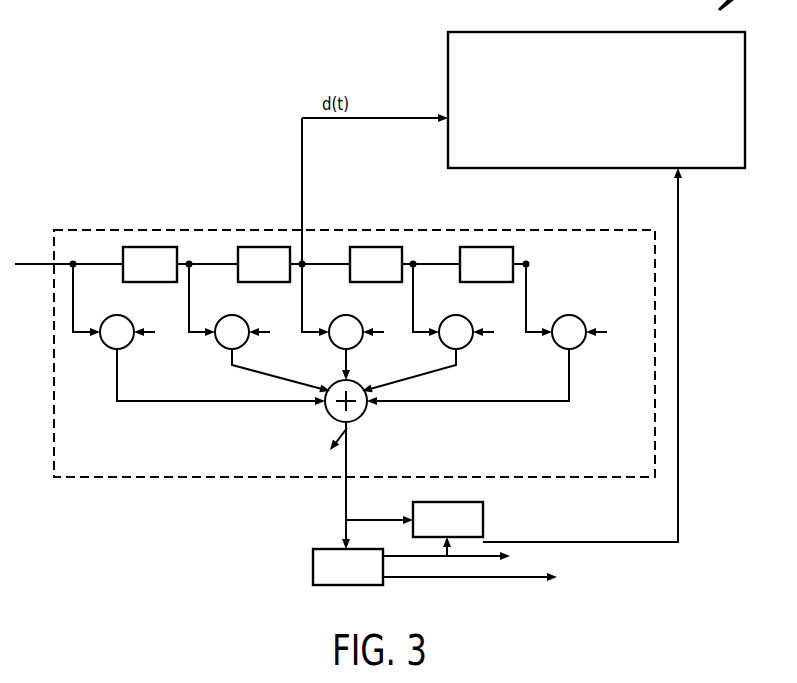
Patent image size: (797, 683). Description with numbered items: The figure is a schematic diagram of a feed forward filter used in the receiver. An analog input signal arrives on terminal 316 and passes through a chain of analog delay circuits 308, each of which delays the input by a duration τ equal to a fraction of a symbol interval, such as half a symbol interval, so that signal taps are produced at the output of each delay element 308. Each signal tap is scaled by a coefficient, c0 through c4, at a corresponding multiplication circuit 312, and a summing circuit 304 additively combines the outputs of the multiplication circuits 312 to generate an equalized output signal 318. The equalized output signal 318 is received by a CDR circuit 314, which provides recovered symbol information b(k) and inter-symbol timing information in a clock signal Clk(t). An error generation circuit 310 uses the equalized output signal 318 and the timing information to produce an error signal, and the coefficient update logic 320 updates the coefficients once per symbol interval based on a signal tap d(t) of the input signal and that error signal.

The summing circuit 304 is at (367, 411).
The analog delay circuit 308 is at (160, 247).
The error generation circuit 310 is at (483, 508).
The multiplication circuit 312 is at (131, 342).
The CDR circuit 314 is at (312, 556).
The terminal 316 is at (56, 267).
The equalized output signal 318 is at (345, 470).
The coefficient update logic 320 is at (558, 168).